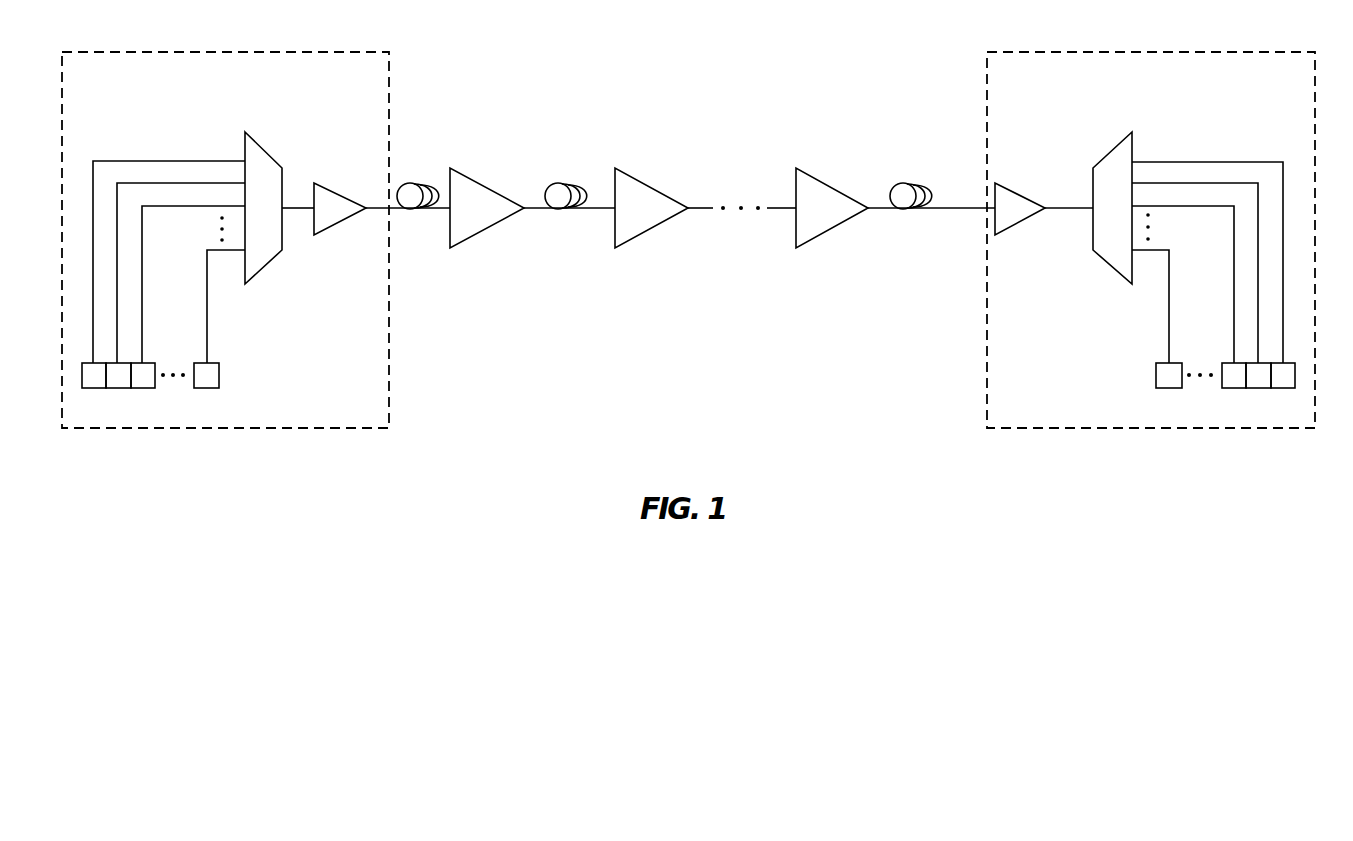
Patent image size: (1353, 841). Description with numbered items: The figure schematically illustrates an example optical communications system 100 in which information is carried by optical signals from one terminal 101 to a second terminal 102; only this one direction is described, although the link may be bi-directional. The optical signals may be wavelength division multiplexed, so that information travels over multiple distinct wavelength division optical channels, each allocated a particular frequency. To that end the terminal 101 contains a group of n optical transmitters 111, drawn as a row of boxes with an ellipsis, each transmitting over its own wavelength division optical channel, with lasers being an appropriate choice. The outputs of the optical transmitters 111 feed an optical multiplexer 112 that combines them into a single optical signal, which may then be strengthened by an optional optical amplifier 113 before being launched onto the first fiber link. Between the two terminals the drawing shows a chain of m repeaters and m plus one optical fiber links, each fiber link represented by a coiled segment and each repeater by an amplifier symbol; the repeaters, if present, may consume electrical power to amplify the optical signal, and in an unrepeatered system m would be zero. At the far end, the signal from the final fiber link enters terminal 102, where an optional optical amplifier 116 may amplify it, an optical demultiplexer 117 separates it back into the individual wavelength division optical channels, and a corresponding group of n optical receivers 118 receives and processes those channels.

The optical communications system 100 is at (689, 29).
The terminal 101 is at (283, 93).
The terminal 102 is at (1208, 93).
The optical transmitters 111 is at (228, 285).
The optical multiplexer 112 is at (270, 148).
The optical amplifier 113 is at (338, 183).
The optical amplifier 116 is at (1020, 183).
The optical demultiplexer 117 is at (1112, 150).
The optical receivers 118 is at (1153, 285).